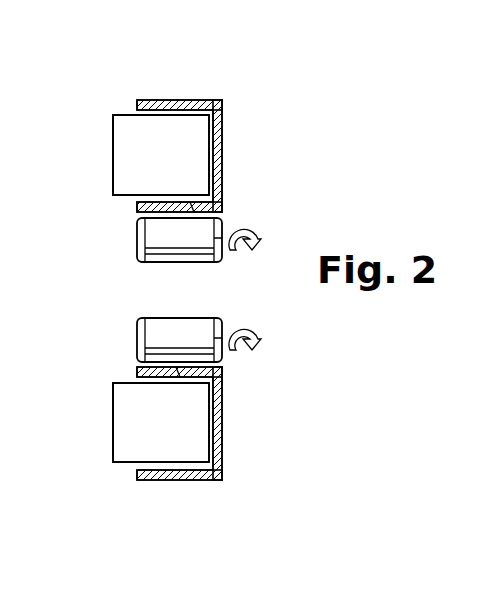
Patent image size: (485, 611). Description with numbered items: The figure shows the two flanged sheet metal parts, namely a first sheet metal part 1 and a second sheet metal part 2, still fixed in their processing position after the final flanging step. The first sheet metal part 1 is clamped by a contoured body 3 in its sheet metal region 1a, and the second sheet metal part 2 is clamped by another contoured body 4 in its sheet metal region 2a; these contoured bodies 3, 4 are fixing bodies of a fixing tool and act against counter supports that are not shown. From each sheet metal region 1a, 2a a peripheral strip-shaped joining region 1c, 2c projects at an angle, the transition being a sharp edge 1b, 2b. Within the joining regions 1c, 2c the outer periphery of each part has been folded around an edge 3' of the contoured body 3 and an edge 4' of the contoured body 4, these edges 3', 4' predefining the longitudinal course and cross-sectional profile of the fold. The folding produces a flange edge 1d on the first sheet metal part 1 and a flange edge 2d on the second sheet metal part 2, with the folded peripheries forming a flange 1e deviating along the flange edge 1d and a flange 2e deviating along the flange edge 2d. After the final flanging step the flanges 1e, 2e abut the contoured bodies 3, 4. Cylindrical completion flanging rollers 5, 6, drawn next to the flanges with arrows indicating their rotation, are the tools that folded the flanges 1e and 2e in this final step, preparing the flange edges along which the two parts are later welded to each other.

The first sheet metal part 1 is at (145, 92).
The sheet metal region 1a is at (186, 101).
The transition 1b is at (222, 100).
The peripheral joining region 1c is at (222, 153).
The flange edge 1d is at (219, 209).
The flange 1e is at (192, 207).
The second sheet metal part 2 is at (146, 484).
The sheet metal region 2a is at (178, 482).
The transition 2b is at (221, 480).
The peripheral joining region 2c is at (219, 432).
The flange edge 2d is at (221, 368).
The flange 2e is at (180, 370).
The contoured body 3 is at (127, 155).
The edge of contoured body 3' is at (175, 174).
The contoured body 4 is at (127, 422).
The edge of contoured body 4' is at (174, 405).
The completion flanging roller 5 is at (148, 237).
The completion flanging roller 6 is at (148, 337).